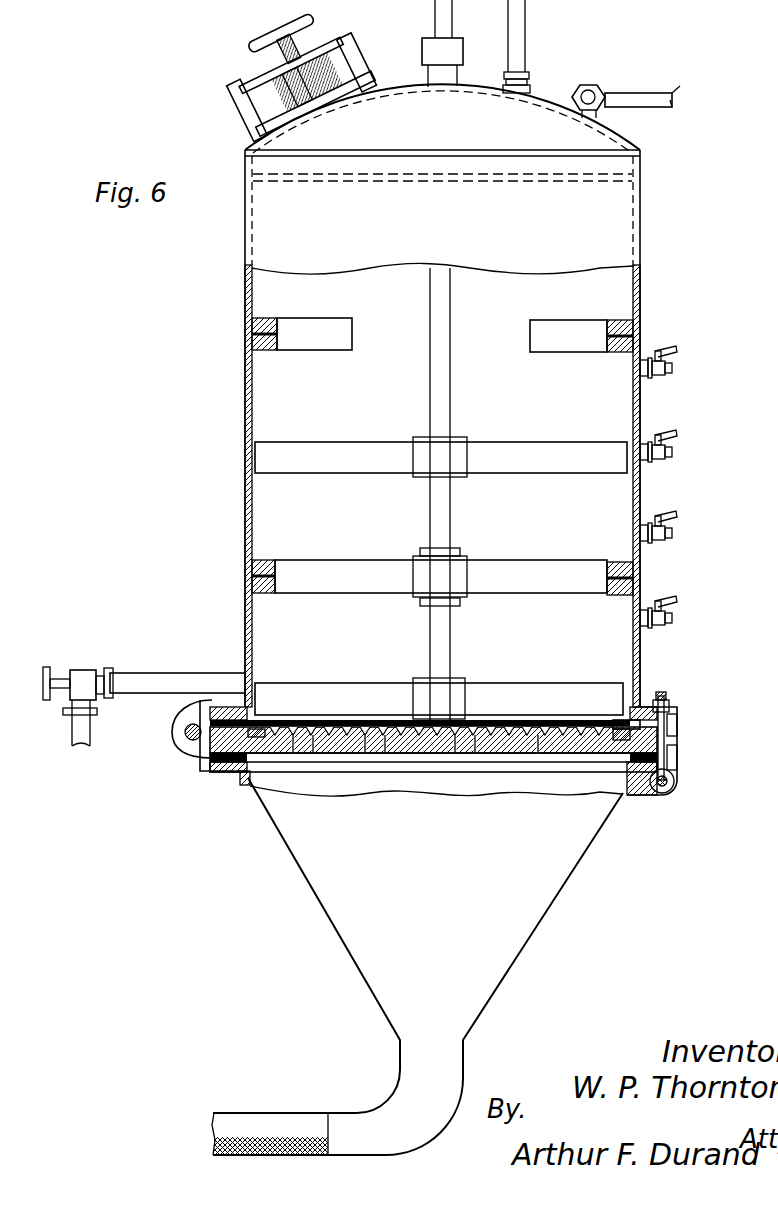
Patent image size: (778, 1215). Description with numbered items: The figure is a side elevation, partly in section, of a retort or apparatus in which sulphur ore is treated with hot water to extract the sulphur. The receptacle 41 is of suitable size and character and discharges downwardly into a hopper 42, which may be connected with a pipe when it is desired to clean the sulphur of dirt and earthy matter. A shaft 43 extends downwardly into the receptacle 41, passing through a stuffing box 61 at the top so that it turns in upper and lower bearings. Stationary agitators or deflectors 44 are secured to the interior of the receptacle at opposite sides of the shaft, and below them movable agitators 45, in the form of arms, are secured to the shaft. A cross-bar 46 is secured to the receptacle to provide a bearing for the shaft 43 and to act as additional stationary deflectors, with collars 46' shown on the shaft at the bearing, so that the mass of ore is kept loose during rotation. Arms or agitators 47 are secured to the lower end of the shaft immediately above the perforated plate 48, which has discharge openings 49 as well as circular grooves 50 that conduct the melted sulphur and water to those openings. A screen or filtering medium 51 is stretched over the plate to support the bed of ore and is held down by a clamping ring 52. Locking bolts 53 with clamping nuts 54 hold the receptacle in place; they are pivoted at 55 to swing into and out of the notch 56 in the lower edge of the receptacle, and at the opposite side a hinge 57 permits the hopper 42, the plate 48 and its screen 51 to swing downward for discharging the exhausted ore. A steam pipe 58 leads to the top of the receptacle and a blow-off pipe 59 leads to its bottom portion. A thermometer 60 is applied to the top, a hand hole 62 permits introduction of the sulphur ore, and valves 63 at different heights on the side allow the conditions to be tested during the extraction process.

The receptacle 41 is at (640, 300).
The hopper 42 is at (577, 868).
The shaft 43 is at (452, 388).
The stationary agitators 44 is at (305, 325).
The movable agitators 45 is at (560, 442).
The cross-bar 46 is at (442, 562).
The collar 46' is at (465, 567).
The arms or agitators 47 is at (548, 683).
The perforated plate 48 is at (465, 762).
The discharge openings 49 is at (555, 745).
The circular grooves 50 is at (290, 742).
The screen or filtering medium 51 is at (345, 724).
The clamping ring 52 is at (262, 728).
The locking bolts 53 is at (667, 696).
The clamping nuts 54 is at (670, 706).
The pivot 55 is at (675, 782).
The notch 56 is at (678, 716).
The hinge 57 is at (190, 738).
The steam pipe 58 is at (672, 94).
The blow-off pipe 59 is at (148, 673).
The thermometer 60 is at (525, 66).
The stuffing box 61 is at (452, 42).
The hand hole 62 is at (355, 42).
The valves 63 is at (662, 378).